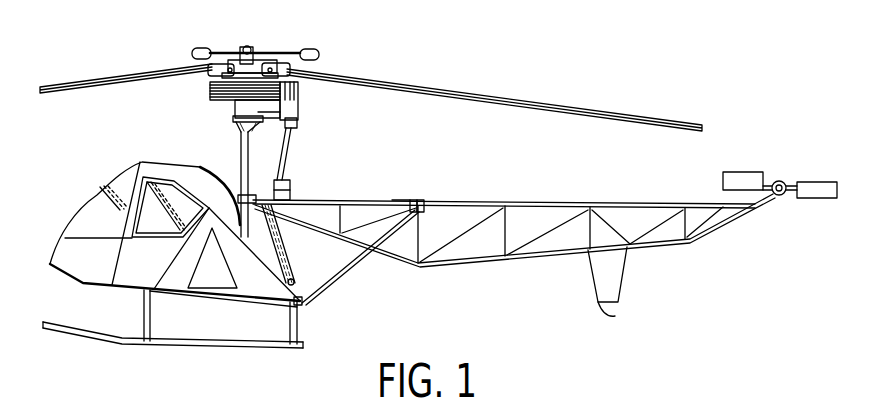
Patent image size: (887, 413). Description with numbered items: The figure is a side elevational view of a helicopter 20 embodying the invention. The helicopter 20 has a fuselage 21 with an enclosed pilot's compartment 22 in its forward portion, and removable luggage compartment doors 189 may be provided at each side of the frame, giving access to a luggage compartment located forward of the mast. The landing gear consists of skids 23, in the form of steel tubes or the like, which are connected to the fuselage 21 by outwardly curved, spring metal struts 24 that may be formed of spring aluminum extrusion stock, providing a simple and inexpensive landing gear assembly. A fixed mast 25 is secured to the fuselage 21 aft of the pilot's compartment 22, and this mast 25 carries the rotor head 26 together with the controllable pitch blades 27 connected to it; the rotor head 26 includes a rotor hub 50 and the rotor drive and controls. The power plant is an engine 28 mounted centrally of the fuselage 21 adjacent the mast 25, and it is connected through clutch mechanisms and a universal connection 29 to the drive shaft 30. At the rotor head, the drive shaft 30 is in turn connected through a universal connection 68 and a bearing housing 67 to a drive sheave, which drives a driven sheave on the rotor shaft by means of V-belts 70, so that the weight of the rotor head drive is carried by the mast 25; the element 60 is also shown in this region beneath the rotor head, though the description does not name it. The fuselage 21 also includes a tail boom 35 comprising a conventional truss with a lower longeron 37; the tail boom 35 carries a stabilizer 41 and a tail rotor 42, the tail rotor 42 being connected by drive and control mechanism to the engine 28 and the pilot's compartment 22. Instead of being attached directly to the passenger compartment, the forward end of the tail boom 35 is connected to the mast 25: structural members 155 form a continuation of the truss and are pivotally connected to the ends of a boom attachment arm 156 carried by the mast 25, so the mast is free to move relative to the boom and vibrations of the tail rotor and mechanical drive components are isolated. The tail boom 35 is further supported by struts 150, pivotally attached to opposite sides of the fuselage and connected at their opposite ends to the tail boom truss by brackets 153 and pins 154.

The helicopter 20 is at (100, 159).
The fuselage 21 is at (252, 297).
The pilot's compartment 22 is at (92, 213).
The skids 23 is at (180, 350).
The struts 24 is at (145, 312).
The fixed mast 25 is at (240, 142).
The rotor head 26 is at (246, 34).
The controllable pitch blades 27 is at (99, 82).
The engine 28 is at (293, 250).
The universal connection 29 is at (289, 185).
The drive shaft 30 is at (290, 157).
The tail boom 35 is at (481, 194).
The lower longeron 37 is at (457, 265).
The stabilizer 41 is at (592, 277).
The tail rotor 42 is at (723, 177).
The rotor hub 50 is at (252, 62).
The transmission housing 60 is at (272, 115).
The bearing housing 67 is at (294, 110).
The universal connection 68 is at (298, 125).
The V-belts 70 is at (210, 95).
The struts 150 is at (354, 258).
The brackets 153 is at (413, 204).
The pins 154 is at (420, 206).
The structural members 155 is at (392, 200).
The boom attachment arm 156 is at (242, 195).
The luggage compartment doors 189 is at (220, 268).